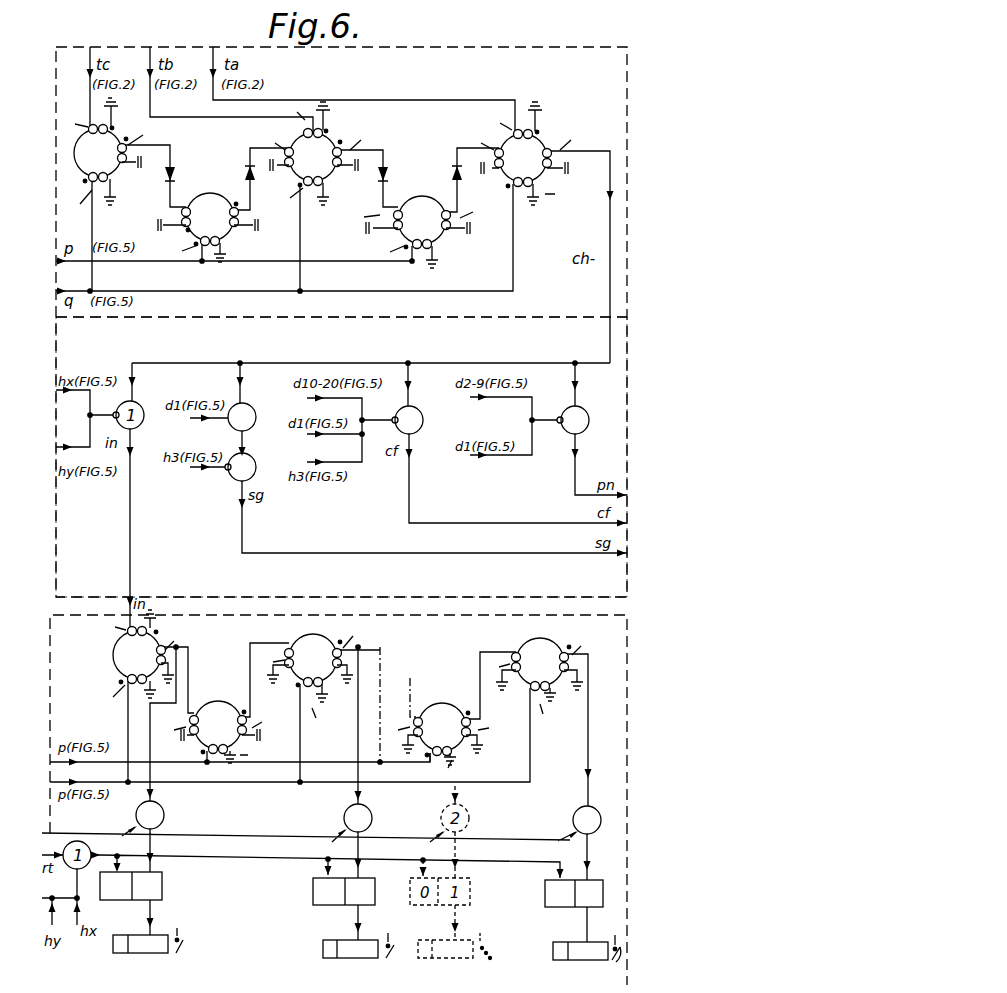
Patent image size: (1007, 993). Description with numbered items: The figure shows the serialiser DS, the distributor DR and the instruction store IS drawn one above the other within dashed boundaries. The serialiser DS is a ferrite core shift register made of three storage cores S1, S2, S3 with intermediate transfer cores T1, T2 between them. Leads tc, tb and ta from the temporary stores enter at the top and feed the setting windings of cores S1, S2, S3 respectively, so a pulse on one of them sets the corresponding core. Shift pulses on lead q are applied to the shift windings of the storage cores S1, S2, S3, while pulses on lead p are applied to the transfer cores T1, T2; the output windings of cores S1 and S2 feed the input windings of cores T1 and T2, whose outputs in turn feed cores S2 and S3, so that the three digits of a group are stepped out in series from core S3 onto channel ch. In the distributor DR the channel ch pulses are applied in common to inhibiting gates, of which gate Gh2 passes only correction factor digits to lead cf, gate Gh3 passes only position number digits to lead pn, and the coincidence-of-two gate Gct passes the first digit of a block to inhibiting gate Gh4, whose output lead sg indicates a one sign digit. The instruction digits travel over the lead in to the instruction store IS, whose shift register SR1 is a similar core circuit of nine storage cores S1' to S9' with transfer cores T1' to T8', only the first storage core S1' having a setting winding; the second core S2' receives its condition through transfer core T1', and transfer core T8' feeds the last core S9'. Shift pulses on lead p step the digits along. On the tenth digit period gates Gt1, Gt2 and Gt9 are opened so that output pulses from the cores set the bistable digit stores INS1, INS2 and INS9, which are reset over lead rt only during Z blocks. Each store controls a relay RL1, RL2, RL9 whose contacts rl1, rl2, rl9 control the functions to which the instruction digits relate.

The serialiser DS is at (586, 89).
The distributor DR is at (341, 457).
The instruction store IS is at (71, 641).
The storage core S1 is at (106, 155).
The transfer core T1 is at (208, 219).
The storage core S2 is at (318, 155).
The transfer core T2 is at (422, 196).
The storage core S3 is at (497, 182).
The coincidence-of-two gate Gct is at (251, 407).
The inhibiting gate Gh2 is at (422, 413).
The inhibiting gate Gh3 is at (589, 410).
The inhibiting gate Gh4 is at (230, 480).
The storage core S1' is at (135, 658).
The transfer core T1' is at (219, 720).
The storage core S2' is at (314, 674).
The transfer core T8' is at (444, 730).
The storage core S9' is at (540, 676).
The shift register SR1 is at (324, 761).
The gate Gt1 is at (165, 815).
The gate Gt2 is at (344, 814).
The gate Gt9 is at (573, 816).
The bistable circuit INS1 is at (150, 886).
The bistable circuit INS2 is at (321, 891).
The bistable circuit INS9 is at (554, 893).
The relay RL1 is at (140, 956).
The relay RL2 is at (350, 961).
The relay RL9 is at (572, 962).
The relay contact rl1 is at (189, 944).
The relay contact rl2 is at (398, 957).
The relay contact rl9 is at (604, 963).